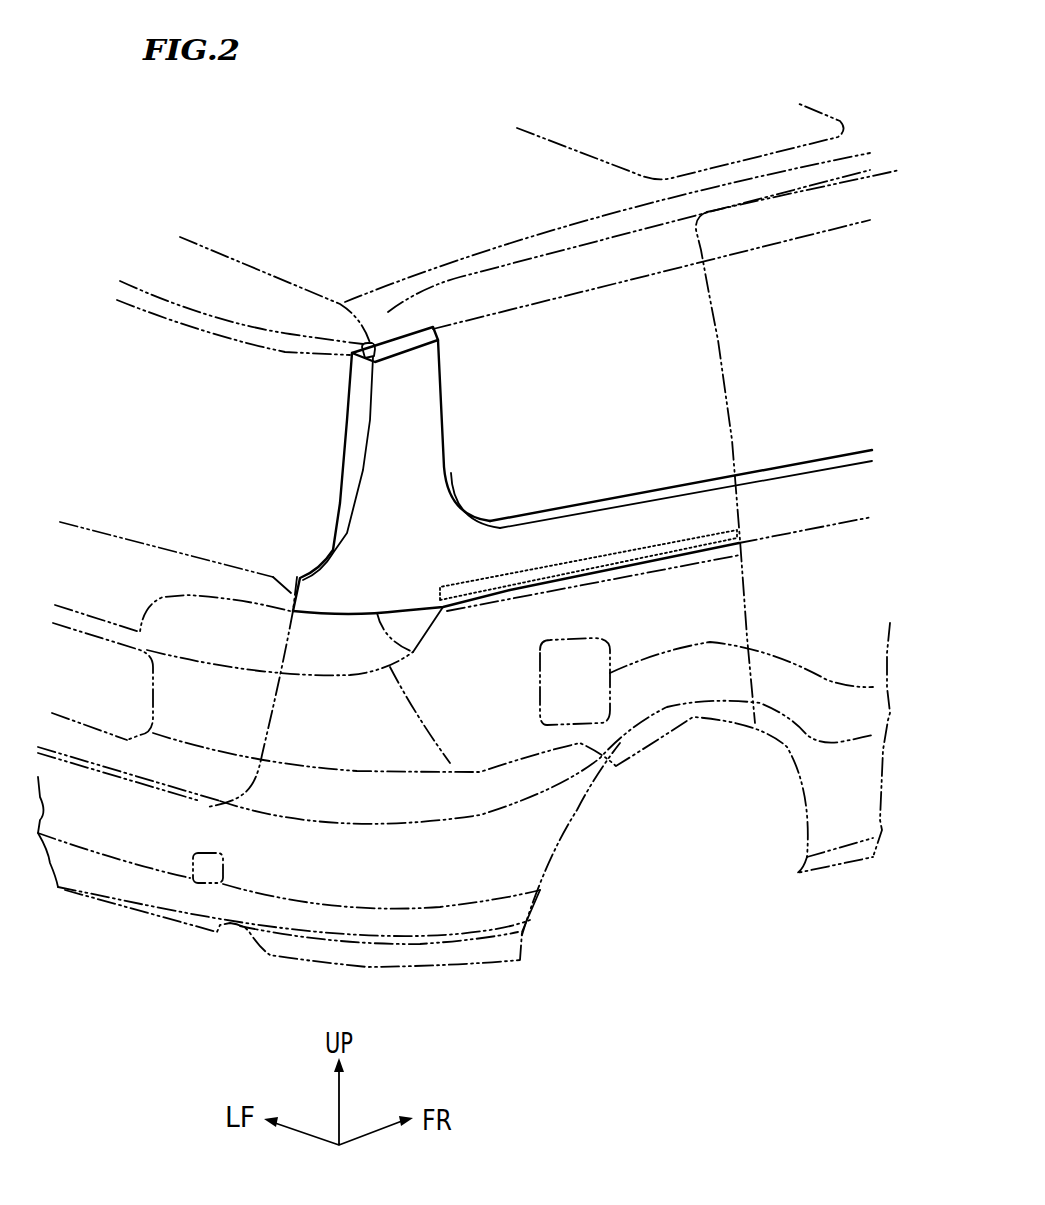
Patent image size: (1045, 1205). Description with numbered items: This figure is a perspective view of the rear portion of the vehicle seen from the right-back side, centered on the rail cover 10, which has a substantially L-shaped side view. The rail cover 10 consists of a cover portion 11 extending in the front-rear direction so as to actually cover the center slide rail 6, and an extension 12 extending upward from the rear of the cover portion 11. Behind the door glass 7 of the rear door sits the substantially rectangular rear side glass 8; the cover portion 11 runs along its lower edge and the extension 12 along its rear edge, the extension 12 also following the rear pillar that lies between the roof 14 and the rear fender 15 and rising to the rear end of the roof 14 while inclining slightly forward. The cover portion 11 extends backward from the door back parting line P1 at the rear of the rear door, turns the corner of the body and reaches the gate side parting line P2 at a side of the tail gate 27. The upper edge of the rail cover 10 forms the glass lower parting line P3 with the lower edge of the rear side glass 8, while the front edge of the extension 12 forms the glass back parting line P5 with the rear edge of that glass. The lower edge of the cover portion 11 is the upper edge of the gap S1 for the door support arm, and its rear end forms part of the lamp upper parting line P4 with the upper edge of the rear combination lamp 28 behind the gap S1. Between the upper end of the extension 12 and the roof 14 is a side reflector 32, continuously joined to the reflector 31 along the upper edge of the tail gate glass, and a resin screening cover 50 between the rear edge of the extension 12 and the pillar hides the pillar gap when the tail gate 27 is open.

The center slide rail 6 is at (665, 553).
The door glass 7 is at (797, 327).
The rear side glass 8 is at (631, 382).
The rail cover 10 is at (615, 412).
The cover portion 11 is at (628, 487).
The extension 12 is at (460, 465).
The roof 14 is at (393, 173).
The rear fender 15 is at (503, 705).
The tail gate 27 is at (245, 255).
The rear combination lamp 28 is at (350, 675).
The reflector 31 is at (170, 303).
The side reflector 32 is at (418, 330).
The screening cover 50 is at (339, 476).
The door back parting line P1 is at (728, 407).
The gate side parting line P2 is at (365, 442).
The glass lower parting line P3 is at (685, 487).
The lamp upper parting line P4 is at (413, 652).
The glass back parting line P5 is at (442, 358).
The gap S1 is at (617, 573).